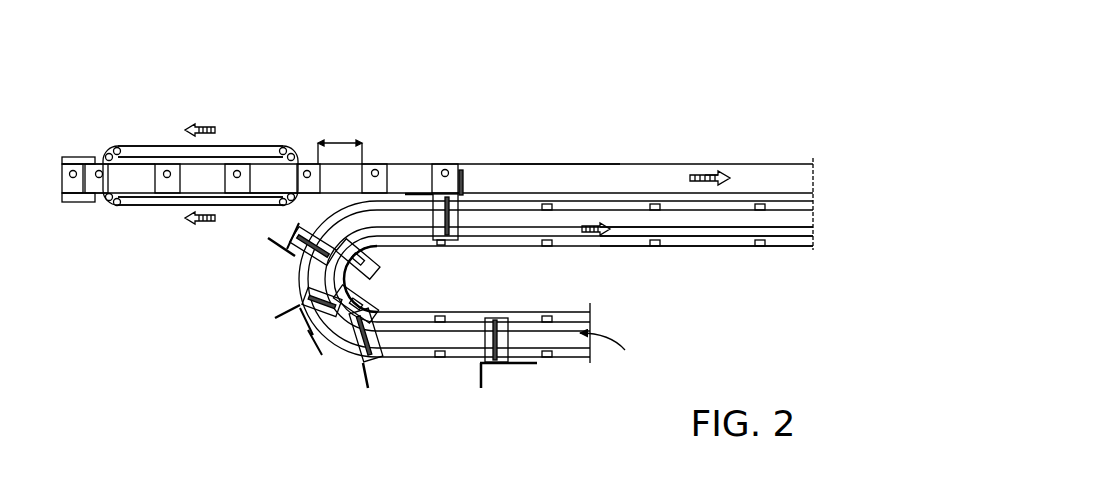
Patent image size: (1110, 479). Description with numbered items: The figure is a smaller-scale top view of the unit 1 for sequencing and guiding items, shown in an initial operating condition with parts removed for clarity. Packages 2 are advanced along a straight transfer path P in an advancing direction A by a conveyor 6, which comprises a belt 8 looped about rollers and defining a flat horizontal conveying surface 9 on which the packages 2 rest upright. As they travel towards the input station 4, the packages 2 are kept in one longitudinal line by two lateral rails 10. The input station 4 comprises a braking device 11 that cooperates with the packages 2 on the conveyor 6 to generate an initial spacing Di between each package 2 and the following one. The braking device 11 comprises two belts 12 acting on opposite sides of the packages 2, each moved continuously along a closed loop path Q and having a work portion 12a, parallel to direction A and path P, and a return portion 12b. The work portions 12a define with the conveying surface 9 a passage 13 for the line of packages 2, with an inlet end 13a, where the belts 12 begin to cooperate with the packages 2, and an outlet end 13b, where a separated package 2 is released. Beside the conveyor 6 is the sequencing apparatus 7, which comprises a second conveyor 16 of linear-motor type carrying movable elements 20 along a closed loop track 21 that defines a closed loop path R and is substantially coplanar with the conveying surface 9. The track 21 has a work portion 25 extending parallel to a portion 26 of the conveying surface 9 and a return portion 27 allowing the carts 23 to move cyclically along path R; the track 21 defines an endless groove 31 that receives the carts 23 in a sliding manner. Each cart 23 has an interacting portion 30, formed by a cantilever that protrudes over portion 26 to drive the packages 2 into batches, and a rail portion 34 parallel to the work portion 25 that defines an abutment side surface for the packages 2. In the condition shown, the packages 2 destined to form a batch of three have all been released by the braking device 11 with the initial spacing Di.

The unit 1 is at (581, 104).
The packages 2 is at (82, 166).
The input station 4 is at (150, 141).
The conveyor 6 is at (780, 163).
The sequencing apparatus 7 is at (569, 369).
The belt 8 is at (632, 164).
The conveying surface 9 is at (589, 163).
The lateral rails 10 is at (68, 157).
The braking device 11 is at (268, 136).
The belts 12 is at (238, 141).
The work portion 12a is at (137, 160).
The return portion 12b is at (165, 146).
The passage 13 is at (264, 178).
The inlet end 13a is at (132, 184).
The outlet end 13b is at (333, 179).
The second conveyor 16 is at (695, 248).
The movable elements 20 is at (358, 256).
The track 21 is at (790, 238).
The carts 23 is at (375, 351).
The work portion 25 is at (479, 219).
The portion 26 is at (531, 185).
The return portion 27 is at (613, 351).
The interacting portions 30 is at (281, 246).
The groove 31 is at (723, 235).
The rail portion 34 is at (410, 193).
The closed loop path Q is at (207, 124).
The closed loop path R is at (610, 233).
The initial spacing Di is at (341, 140).
The transfer path P is at (706, 164).
The advancing direction A is at (713, 142).